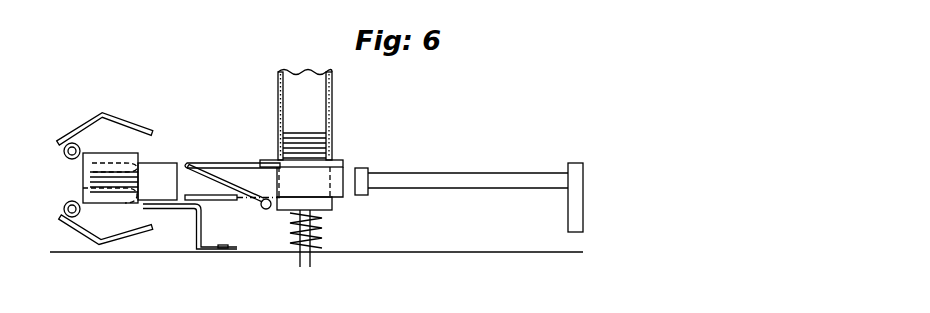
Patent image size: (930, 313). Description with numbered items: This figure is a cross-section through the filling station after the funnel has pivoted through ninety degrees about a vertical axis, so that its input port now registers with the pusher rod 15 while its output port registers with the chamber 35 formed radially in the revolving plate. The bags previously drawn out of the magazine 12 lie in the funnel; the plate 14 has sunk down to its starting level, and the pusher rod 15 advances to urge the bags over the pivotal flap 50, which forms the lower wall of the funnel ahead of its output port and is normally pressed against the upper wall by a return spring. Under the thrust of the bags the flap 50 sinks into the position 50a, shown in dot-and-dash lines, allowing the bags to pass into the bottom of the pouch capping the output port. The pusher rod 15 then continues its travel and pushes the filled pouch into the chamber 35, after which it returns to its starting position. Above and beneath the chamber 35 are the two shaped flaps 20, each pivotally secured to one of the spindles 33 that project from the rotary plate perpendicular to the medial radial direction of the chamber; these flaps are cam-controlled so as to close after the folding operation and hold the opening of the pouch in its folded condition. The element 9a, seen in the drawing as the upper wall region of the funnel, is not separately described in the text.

The upper plate 9a is at (203, 163).
The magazine 12 is at (331, 112).
The plate 14 is at (333, 210).
The pusher rod 15 is at (429, 173).
The shaped flaps 20 is at (135, 121).
The spindles 33 is at (63, 151).
The chamber 35 is at (135, 163).
The pivotal flap 50 is at (222, 181).
The position of the flap 50a is at (246, 200).